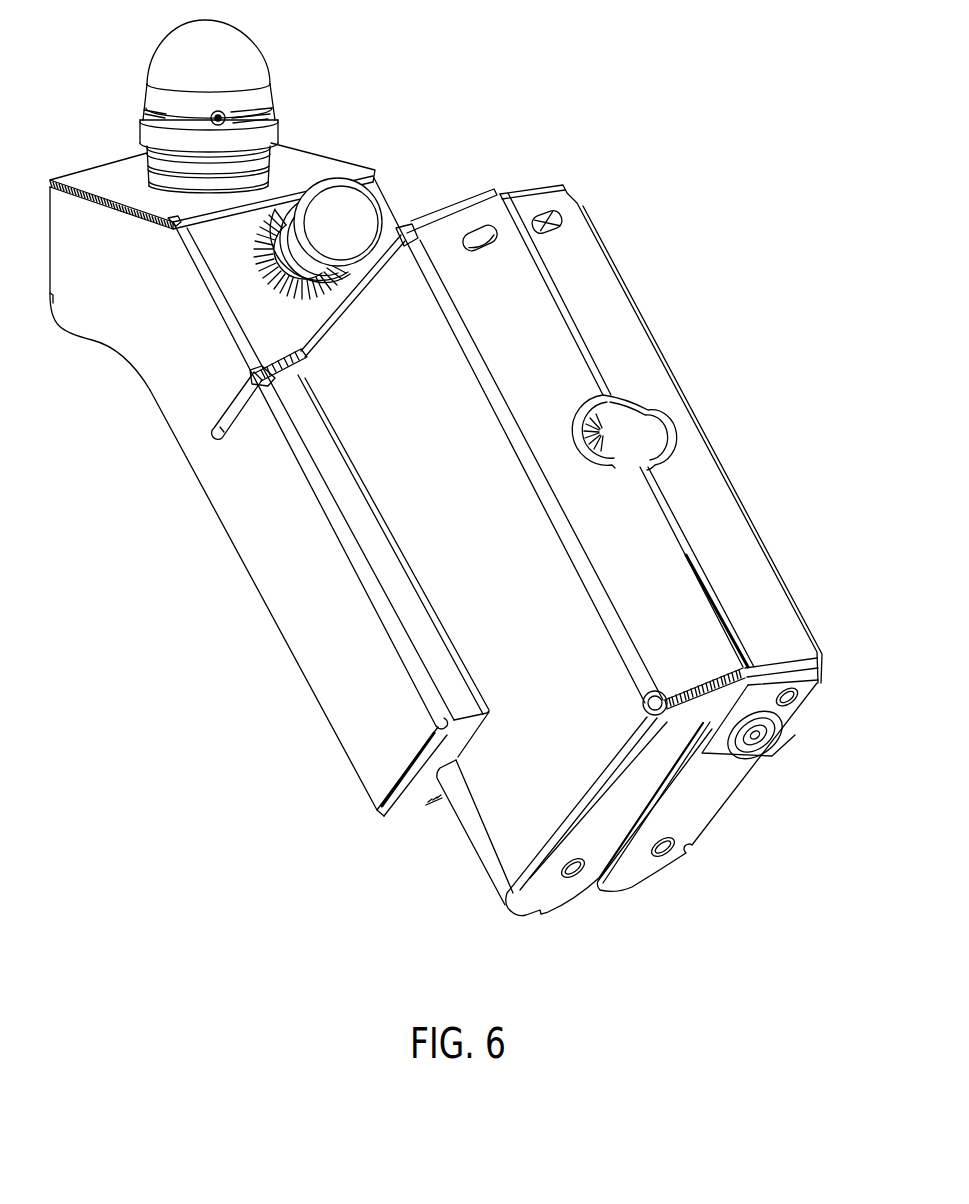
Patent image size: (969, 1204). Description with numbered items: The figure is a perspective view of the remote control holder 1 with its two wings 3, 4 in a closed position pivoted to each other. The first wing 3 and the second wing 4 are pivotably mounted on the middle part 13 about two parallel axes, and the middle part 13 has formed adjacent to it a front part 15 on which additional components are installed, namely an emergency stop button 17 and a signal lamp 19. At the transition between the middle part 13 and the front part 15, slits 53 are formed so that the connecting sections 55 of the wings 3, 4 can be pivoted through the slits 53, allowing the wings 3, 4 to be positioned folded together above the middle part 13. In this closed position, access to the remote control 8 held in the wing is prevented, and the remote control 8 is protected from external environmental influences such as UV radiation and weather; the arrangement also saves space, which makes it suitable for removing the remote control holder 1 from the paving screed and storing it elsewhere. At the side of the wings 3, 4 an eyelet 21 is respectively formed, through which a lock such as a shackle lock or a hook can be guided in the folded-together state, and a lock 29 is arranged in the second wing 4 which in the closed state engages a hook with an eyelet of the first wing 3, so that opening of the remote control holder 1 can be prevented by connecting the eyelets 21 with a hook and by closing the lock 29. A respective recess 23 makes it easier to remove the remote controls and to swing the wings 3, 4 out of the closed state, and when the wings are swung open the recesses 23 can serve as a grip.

The remote control holder 1 is at (596, 62).
The first wing 3 is at (453, 197).
The second wing 4 is at (528, 188).
The remote control 8 is at (620, 417).
The middle part 13 is at (345, 666).
The front part 15 is at (144, 297).
The emergency stop button 17 is at (386, 207).
The signal lamp 19 is at (267, 48).
The eyelet 21 is at (486, 252).
The recess 23 is at (590, 456).
The lock 29 is at (768, 744).
The slits 53 is at (225, 436).
The connecting sections 55 is at (296, 362).